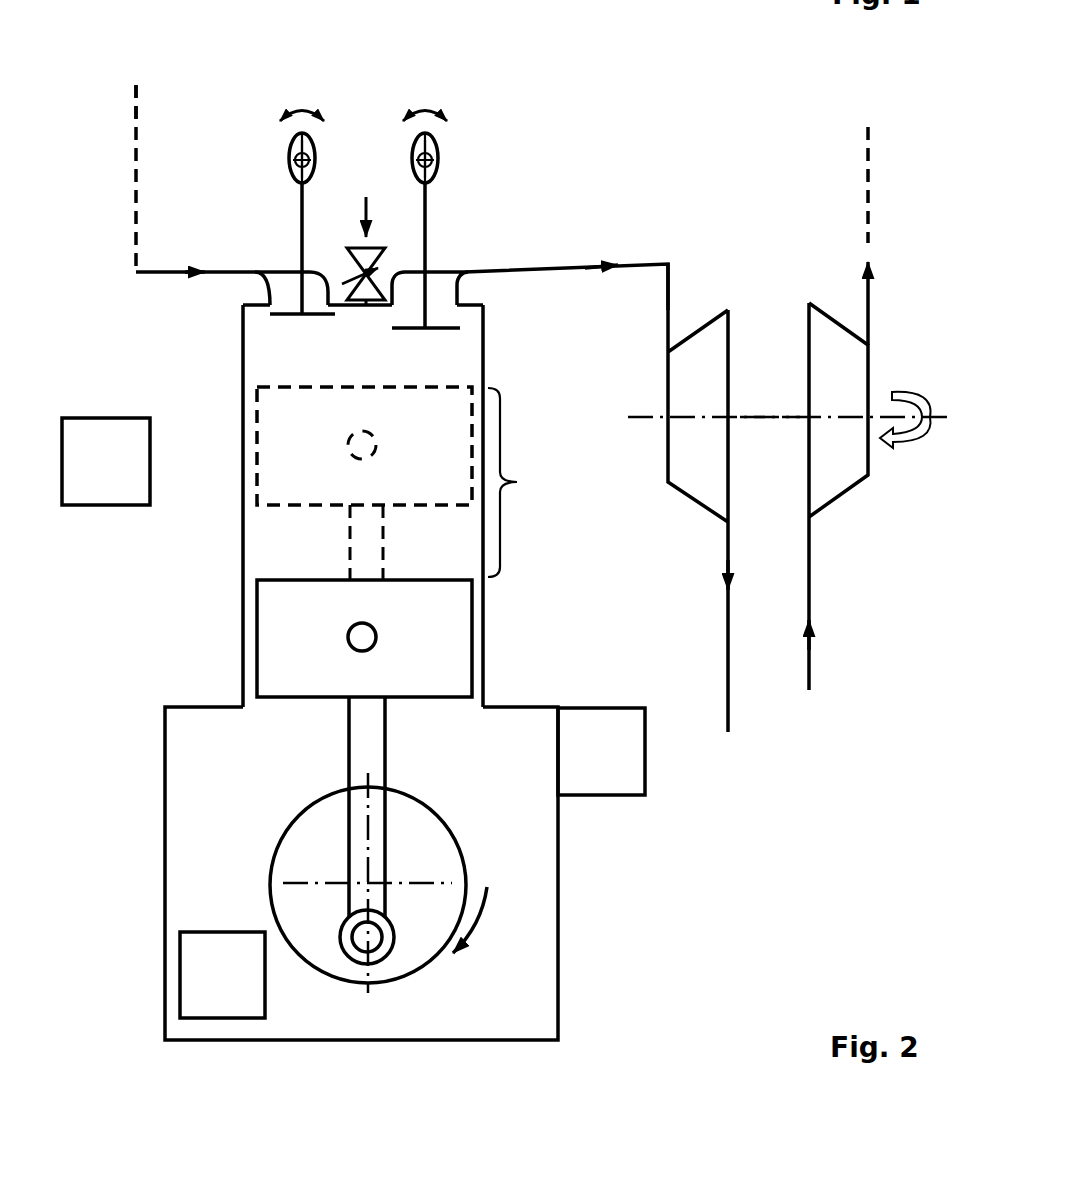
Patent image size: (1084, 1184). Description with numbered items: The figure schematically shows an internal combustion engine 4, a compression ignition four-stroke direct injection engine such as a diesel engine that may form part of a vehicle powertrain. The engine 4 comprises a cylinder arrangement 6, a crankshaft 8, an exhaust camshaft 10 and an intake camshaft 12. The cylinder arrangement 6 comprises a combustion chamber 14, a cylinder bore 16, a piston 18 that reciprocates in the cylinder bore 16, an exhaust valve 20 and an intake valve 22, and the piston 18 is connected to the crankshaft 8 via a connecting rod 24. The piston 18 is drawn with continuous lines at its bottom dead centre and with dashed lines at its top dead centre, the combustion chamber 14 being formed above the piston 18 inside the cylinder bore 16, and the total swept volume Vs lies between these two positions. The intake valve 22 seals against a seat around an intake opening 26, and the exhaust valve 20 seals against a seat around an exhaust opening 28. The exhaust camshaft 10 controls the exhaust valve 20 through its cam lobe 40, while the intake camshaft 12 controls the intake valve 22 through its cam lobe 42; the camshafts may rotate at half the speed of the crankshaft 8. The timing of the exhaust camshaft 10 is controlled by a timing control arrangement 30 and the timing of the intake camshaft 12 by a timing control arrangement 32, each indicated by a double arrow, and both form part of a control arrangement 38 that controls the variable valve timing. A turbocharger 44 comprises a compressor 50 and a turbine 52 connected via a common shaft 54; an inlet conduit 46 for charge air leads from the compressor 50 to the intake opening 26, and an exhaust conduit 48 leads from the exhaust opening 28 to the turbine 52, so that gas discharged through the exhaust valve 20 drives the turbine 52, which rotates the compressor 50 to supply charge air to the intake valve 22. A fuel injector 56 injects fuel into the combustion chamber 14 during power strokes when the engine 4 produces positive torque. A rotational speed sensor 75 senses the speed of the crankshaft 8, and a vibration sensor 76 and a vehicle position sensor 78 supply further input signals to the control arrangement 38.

The internal combustion engine 4 is at (700, 121).
The cylinder arrangement 6 is at (564, 459).
The crankshaft 8 is at (442, 847).
The exhaust camshaft 10 is at (440, 150).
The intake camshaft 12 is at (314, 153).
The combustion chamber 14 is at (277, 368).
The cylinder bore 16 is at (483, 642).
The piston 18 is at (411, 465).
The exhaust valve 20 is at (427, 223).
The intake valve 22 is at (302, 232).
The connecting rod 24 is at (377, 740).
The intake opening 26 is at (327, 307).
The exhaust opening 28 is at (406, 310).
The timing control arrangement 30 is at (440, 104).
The timing control arrangement 32 is at (320, 104).
The control arrangement 38 is at (120, 45).
The cam lobe 40 is at (436, 174).
The cam lobe 42 is at (294, 152).
The turbocharger 44 is at (750, 290).
The inlet conduit 46 is at (194, 280).
The exhaust conduit 48 is at (593, 266).
The compressor 50 is at (827, 478).
The turbine 52 is at (715, 495).
The common shaft 54 is at (793, 418).
The fuel injector 56 is at (353, 258).
The rotational speed sensor 75 is at (335, 886).
The vibration sensor 76 is at (587, 767).
The vehicle position sensor 78 is at (92, 477).